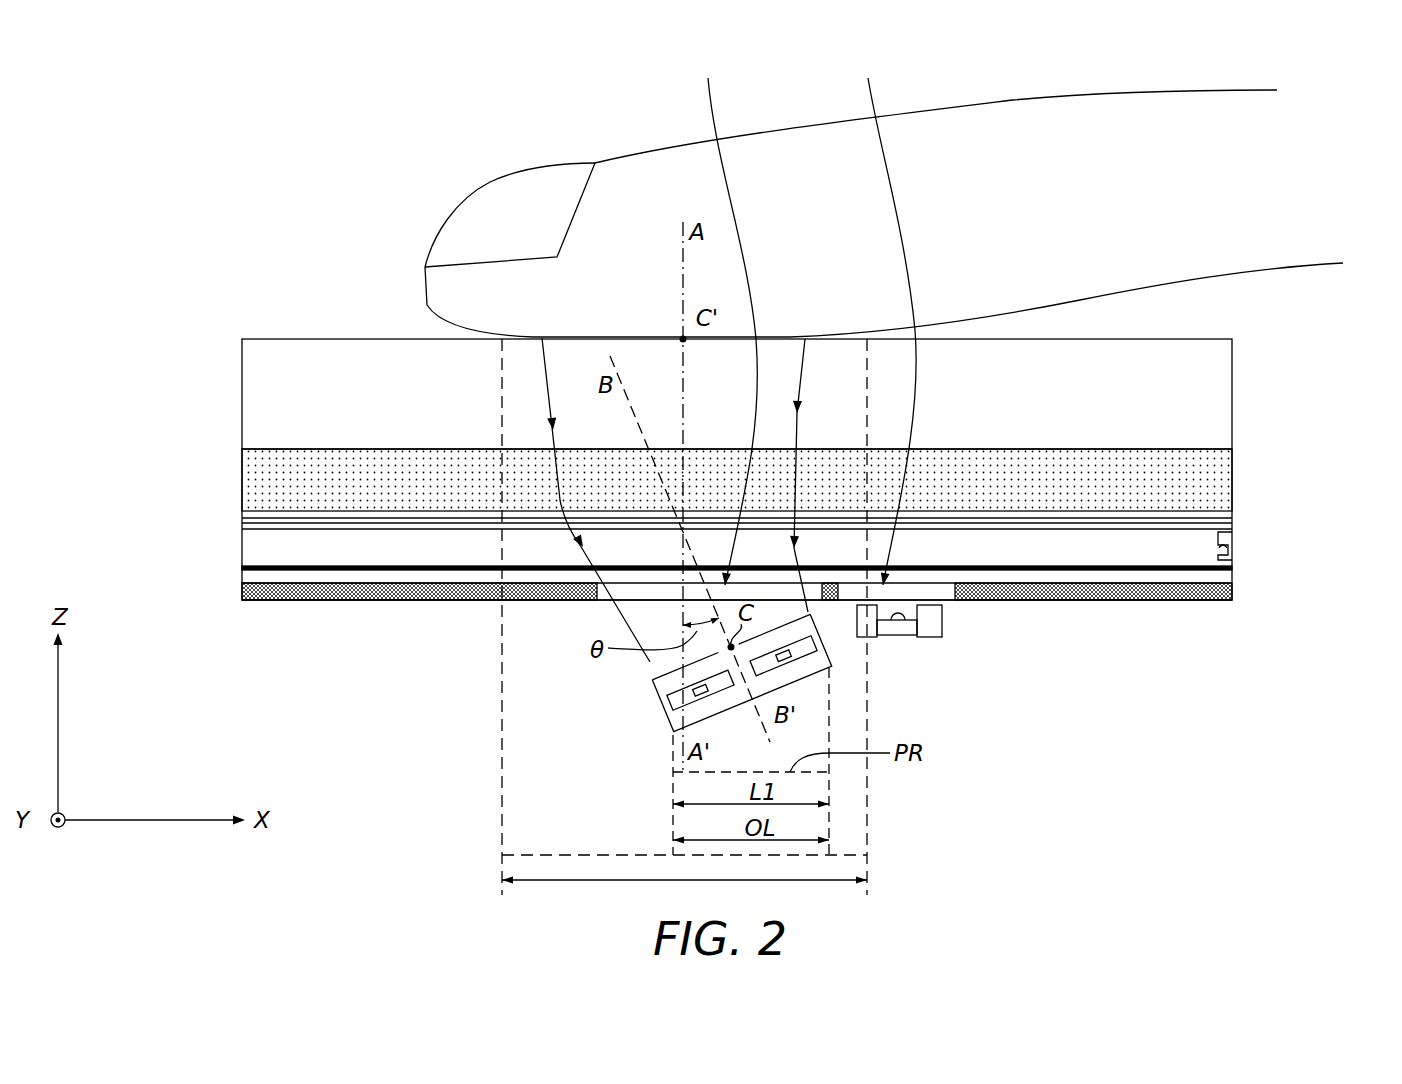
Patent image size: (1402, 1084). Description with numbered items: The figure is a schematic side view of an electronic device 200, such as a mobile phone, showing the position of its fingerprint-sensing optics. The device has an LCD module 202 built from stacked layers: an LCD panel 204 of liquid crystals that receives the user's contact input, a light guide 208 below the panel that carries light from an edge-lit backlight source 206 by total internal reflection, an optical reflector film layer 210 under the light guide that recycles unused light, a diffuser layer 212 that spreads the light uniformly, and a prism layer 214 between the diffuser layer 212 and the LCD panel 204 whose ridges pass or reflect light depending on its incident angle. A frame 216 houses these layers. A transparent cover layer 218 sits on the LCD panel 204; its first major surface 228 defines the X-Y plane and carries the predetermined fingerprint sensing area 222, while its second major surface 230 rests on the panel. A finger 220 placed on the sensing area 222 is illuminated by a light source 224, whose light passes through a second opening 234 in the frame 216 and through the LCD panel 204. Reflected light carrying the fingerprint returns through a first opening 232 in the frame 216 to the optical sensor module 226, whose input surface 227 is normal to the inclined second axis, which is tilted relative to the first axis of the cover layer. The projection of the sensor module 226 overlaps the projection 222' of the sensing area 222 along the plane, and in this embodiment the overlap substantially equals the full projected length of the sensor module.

The electronic device 200 is at (232, 247).
The LCD module 202 is at (202, 448).
The LCD panel 204 is at (1227, 497).
The backlight source 206 is at (1230, 550).
The light guide 208 is at (265, 545).
The optical reflector film layer 210 is at (310, 577).
The diffuser layer 212 is at (1227, 528).
The prism layer 214 is at (1227, 517).
The frame 216 is at (360, 595).
The cover layer 218 is at (253, 398).
The finger 220 is at (788, 162).
The predetermined fingerprint sensing area 222 is at (451, 478).
The projection of the predetermined fingerprint sensing area 222' is at (684, 622).
The light source 224 is at (893, 637).
The optical sensor module 226 is at (665, 700).
The surface of the optical sensor module 227 is at (667, 677).
The first major surface 228 is at (945, 337).
The second major surface 230 is at (1145, 450).
The first opening 232 is at (721, 318).
The second opening 234 is at (853, 329).